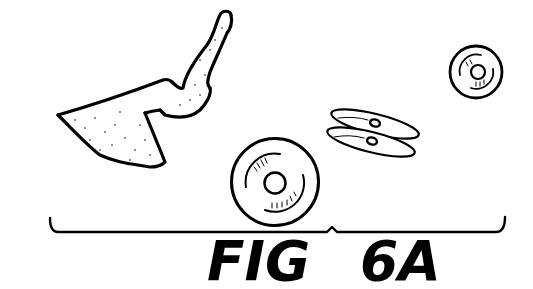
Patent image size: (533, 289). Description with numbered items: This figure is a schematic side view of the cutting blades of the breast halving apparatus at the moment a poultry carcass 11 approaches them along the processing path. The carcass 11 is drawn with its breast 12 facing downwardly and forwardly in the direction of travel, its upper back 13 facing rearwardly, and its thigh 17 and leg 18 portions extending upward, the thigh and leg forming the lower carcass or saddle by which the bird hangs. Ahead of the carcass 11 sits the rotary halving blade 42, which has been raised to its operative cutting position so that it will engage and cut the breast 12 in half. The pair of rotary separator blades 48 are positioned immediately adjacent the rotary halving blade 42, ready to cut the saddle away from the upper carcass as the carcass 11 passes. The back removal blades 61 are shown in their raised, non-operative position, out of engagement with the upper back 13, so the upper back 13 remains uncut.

The carcass 11 is at (75, 81).
The breast 12 is at (133, 163).
The upper back 13 is at (119, 96).
The thigh 17 is at (173, 93).
The leg 18 is at (222, 62).
The rotary halving blade 42 is at (241, 210).
The rotary separator blades 48 is at (357, 145).
The back removal blades 61 is at (478, 46).